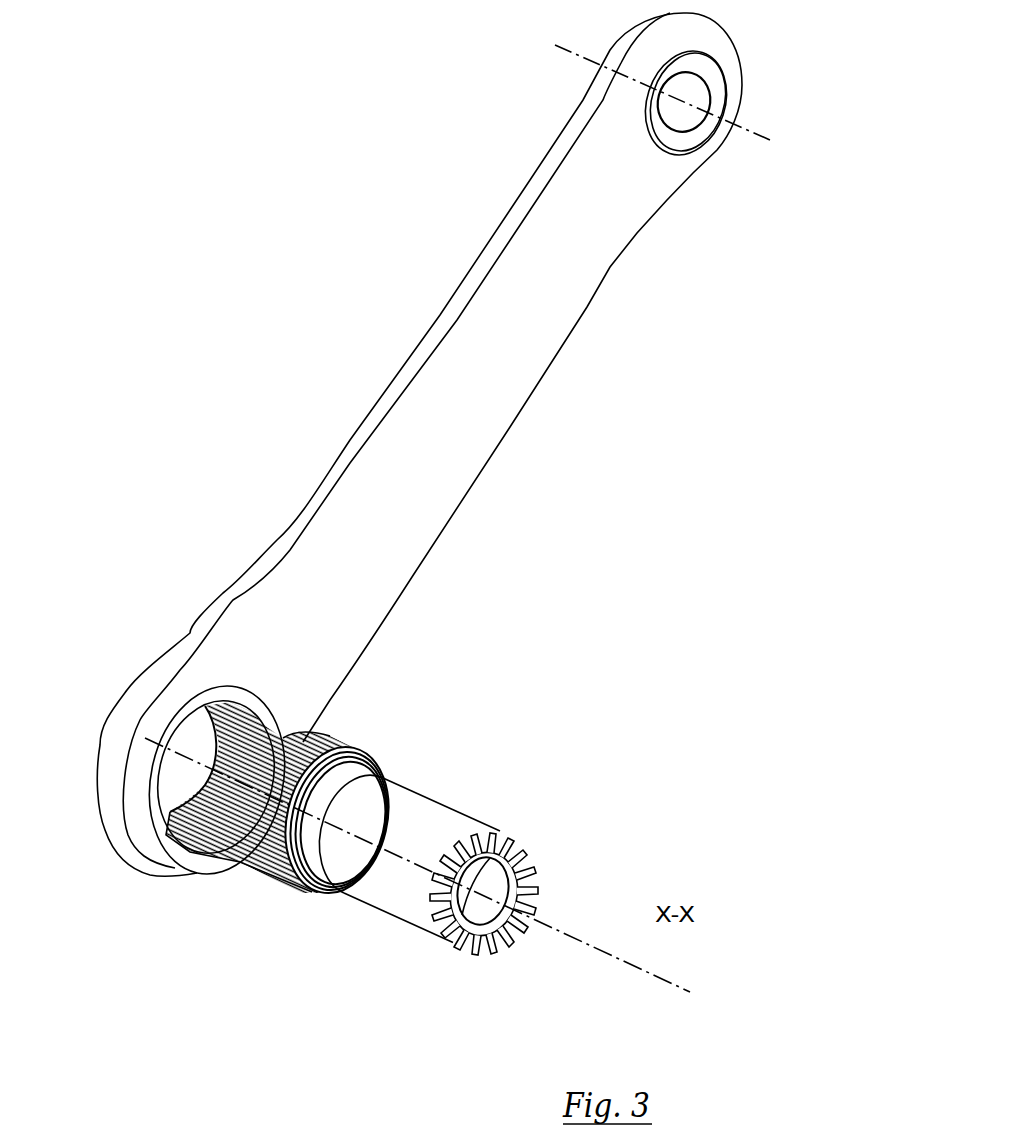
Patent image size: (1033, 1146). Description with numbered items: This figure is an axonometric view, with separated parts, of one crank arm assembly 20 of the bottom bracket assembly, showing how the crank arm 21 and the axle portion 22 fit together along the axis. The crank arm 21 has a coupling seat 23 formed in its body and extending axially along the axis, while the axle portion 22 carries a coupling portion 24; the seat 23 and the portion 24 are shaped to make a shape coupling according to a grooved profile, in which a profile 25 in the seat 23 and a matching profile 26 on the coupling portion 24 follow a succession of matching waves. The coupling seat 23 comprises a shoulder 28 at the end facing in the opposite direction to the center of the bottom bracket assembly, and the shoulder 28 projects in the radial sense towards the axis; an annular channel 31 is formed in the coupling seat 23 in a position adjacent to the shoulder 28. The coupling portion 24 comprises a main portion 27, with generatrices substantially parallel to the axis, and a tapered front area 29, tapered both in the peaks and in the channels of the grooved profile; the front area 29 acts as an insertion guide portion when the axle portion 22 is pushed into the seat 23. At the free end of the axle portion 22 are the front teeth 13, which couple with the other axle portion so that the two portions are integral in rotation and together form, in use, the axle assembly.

The front teeth 13 is at (490, 955).
The crank arm assembly 20 is at (596, 520).
The crank arm 21 is at (440, 378).
The axle portion 22 is at (448, 822).
The coupling seat 23 is at (198, 742).
The coupling portion 24 is at (372, 736).
The profile 25 is at (210, 830).
The matching profile 26 is at (280, 882).
The main portion 27 is at (310, 727).
The shoulder 28 is at (137, 840).
The tapered front area 29 is at (233, 862).
The annular channel 31 is at (230, 735).